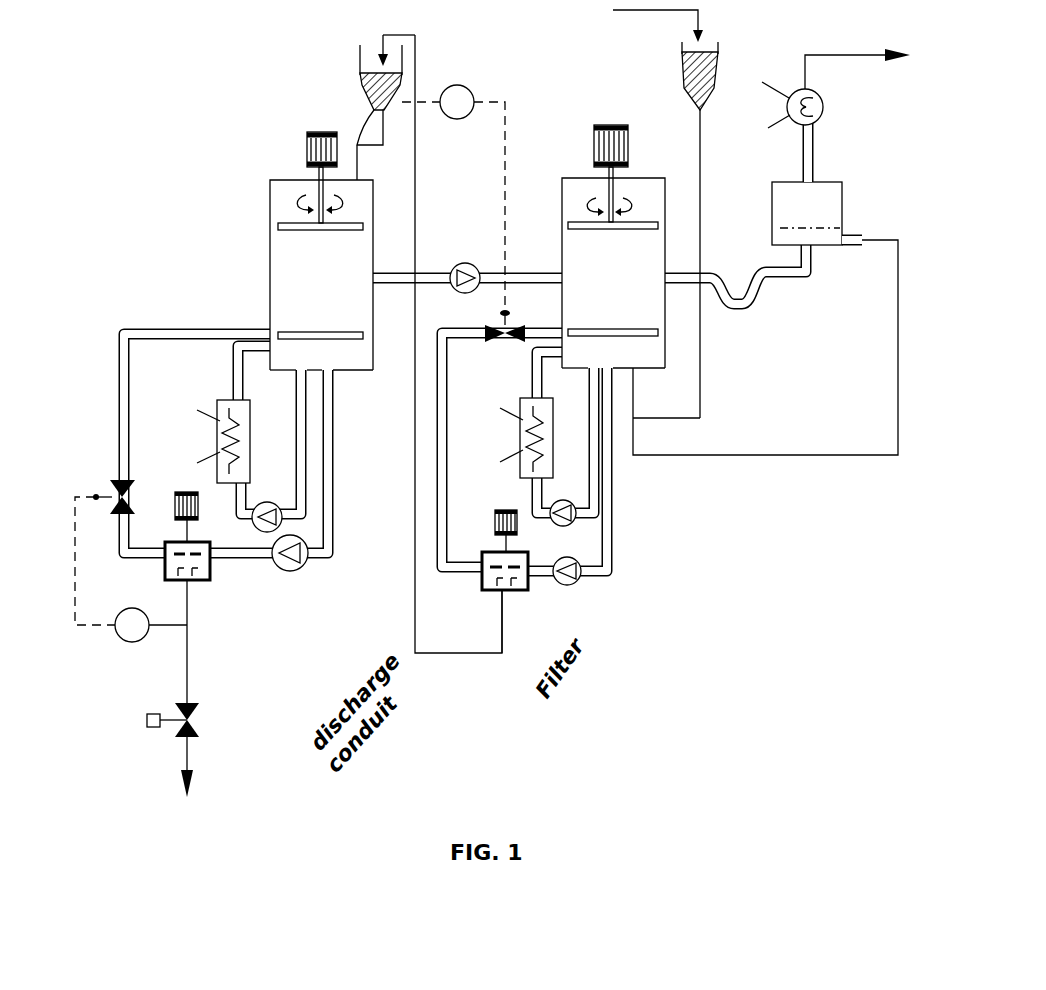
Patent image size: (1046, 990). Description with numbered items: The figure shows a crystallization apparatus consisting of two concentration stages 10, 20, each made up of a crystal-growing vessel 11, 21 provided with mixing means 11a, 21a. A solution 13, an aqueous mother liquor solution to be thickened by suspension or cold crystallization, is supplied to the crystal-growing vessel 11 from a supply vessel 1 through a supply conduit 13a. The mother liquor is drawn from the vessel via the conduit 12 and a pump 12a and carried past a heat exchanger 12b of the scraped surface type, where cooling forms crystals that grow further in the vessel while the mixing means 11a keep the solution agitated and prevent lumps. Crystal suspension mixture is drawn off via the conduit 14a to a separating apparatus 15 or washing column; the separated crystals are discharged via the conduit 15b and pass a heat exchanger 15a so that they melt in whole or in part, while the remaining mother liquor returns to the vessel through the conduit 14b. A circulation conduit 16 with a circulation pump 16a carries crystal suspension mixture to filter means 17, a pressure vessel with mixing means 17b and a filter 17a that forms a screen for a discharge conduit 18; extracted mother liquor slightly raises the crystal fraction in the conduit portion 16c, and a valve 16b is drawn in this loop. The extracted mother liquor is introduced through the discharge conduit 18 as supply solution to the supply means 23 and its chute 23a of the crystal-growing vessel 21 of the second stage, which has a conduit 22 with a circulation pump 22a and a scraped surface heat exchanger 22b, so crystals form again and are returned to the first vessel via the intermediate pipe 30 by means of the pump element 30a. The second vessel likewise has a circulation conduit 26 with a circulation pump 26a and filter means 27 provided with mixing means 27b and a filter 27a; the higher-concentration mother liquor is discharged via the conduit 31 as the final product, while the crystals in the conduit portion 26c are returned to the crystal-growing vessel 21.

The supply vessel 1 is at (682, 70).
The first concentration stage 10 is at (572, 126).
The crystal-growing vessel 11 is at (642, 348).
The mixing means 11a is at (577, 220).
The conduit 12 is at (576, 505).
The pump 12a is at (577, 524).
The heat exchanger 12b is at (540, 470).
The solution 13 is at (724, 54).
The supply conduit 13a is at (702, 157).
The conduit 14a is at (790, 283).
The conduit 14b is at (790, 456).
The separating apparatus 15 is at (830, 198).
The heat exchanger 15a is at (824, 108).
The conduit 15b is at (853, 55).
The circulation conduit 16 is at (612, 553).
The circulation pump 16a is at (580, 578).
The valve 16b is at (500, 343).
The conduit portion 16c is at (457, 405).
The filter means 17 is at (482, 578).
The filter 17a is at (510, 590).
The mixing means 17b is at (495, 523).
The discharge conduit 18 is at (452, 654).
The second concentration stage 20 is at (246, 238).
The crystal-growing vessel 21 is at (348, 355).
The mixing means 21a is at (283, 222).
The conduit 22 is at (247, 332).
The circulation pump 22a is at (268, 502).
The heat exchanger 22b is at (218, 410).
The supply means 23 is at (360, 80).
The feed chute 23a is at (375, 145).
The circulation conduit 26 is at (330, 518).
The circulation pump 26a is at (305, 570).
The conduit portion 26c is at (120, 415).
The filter means 27 is at (212, 570).
The filter 27a is at (195, 582).
The mixing means 27b is at (177, 503).
The intermediate pipe 30 is at (535, 273).
The pump element 30a is at (470, 263).
The conduit 31 is at (188, 683).